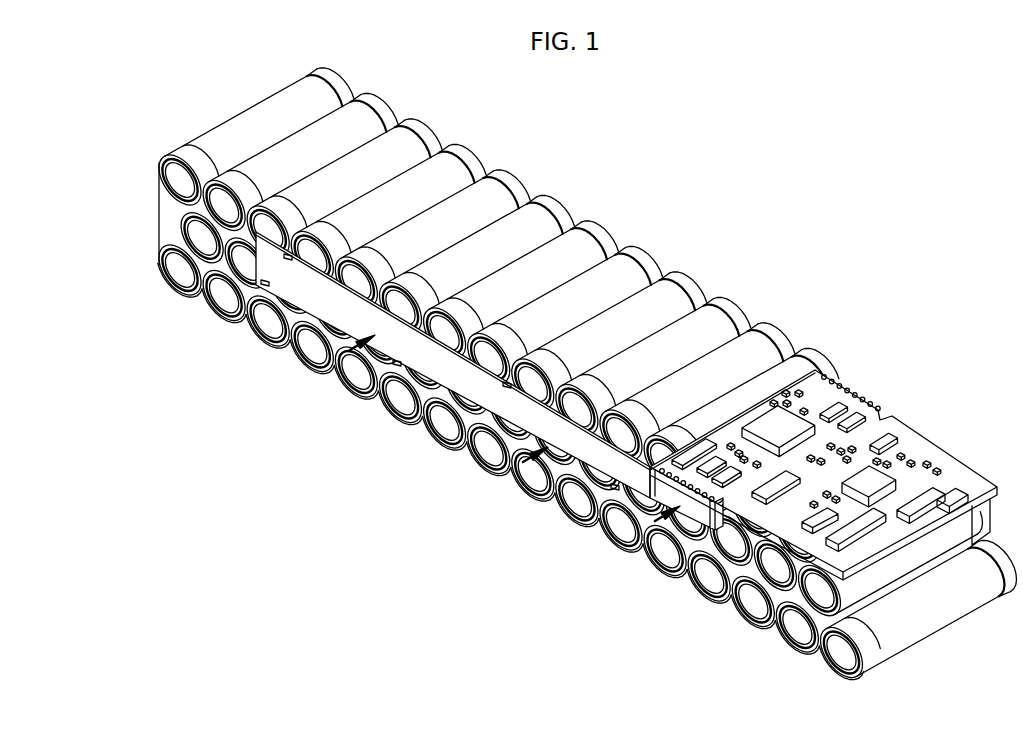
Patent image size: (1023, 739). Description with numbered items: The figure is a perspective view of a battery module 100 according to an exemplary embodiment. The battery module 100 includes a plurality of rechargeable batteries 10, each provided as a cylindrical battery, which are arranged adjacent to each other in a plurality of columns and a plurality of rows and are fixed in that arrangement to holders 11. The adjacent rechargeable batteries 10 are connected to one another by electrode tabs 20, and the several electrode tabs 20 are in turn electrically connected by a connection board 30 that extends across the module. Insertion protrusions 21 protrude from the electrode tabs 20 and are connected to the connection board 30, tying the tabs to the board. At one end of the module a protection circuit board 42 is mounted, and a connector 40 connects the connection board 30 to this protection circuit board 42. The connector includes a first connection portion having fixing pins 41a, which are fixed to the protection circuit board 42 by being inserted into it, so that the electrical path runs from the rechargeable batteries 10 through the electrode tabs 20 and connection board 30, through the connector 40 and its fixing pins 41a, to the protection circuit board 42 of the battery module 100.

The rechargeable battery 10 is at (403, 147).
The holder 11 is at (178, 152).
The electrode tab 20 is at (162, 218).
The insertion protrusion 21 is at (288, 260).
The connection board 30 is at (372, 343).
The connector 40 is at (641, 553).
The fixing pin 41a is at (712, 530).
The protection circuit board 42 is at (918, 447).
The battery module 100 is at (565, 369).